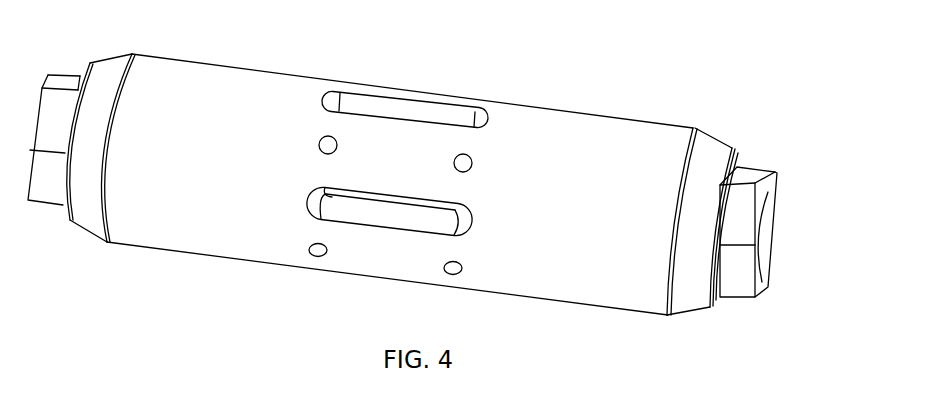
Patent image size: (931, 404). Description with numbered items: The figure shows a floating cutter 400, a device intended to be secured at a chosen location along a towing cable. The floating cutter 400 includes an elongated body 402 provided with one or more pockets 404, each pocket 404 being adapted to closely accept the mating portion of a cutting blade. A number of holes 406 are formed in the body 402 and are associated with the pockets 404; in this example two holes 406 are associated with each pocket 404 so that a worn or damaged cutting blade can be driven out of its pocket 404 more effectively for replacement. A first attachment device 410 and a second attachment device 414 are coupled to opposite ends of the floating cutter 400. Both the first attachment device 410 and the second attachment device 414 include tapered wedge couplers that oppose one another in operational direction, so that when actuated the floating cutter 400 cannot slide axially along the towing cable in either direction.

The floating cutter 400 is at (218, 288).
The body 402 is at (578, 147).
The pocket 404 is at (412, 103).
The hole 406 is at (463, 163).
The first attachment device 410 is at (63, 113).
The second attachment device 414 is at (738, 197).